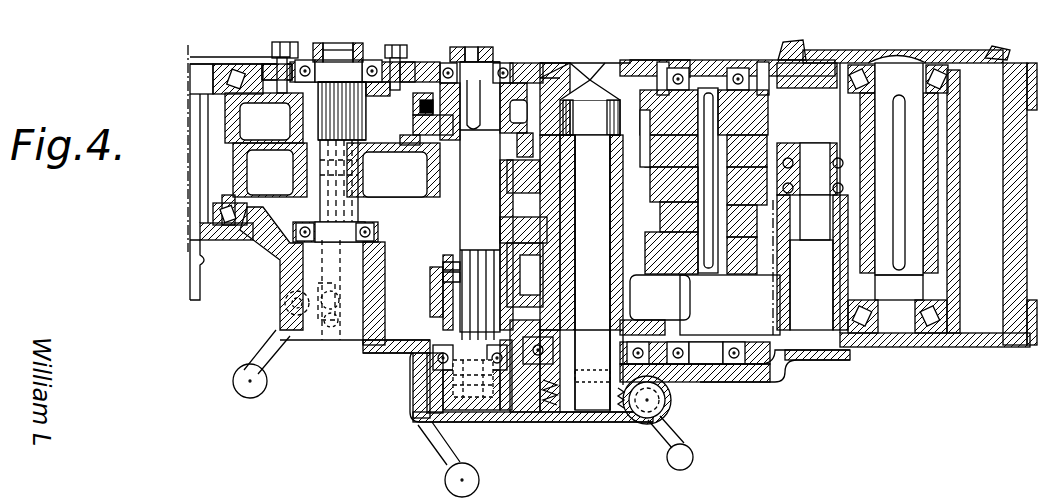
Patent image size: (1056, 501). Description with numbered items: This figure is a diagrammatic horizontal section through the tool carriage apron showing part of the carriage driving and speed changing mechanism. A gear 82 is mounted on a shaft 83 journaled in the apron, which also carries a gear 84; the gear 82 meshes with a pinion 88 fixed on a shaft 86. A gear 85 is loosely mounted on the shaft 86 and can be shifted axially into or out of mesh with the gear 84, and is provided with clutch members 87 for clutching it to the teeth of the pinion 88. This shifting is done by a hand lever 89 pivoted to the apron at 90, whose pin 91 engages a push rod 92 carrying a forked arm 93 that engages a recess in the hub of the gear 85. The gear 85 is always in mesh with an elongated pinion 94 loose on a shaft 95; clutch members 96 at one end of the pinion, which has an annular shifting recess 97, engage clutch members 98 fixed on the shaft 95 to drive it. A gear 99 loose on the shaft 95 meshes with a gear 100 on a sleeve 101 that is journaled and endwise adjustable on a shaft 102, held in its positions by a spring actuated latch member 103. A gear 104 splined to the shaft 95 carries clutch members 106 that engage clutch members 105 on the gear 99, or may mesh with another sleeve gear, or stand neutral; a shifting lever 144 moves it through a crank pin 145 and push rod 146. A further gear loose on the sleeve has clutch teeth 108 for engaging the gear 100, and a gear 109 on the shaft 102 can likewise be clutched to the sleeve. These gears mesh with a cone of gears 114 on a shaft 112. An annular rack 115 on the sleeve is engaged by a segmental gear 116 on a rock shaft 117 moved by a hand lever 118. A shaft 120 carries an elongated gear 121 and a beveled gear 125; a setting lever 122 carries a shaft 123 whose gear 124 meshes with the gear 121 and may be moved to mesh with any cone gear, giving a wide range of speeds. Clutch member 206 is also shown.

The gear 82 is at (334, 43).
The shaft 83 is at (213, 76).
The gear 84 is at (258, 232).
The gear 85 is at (250, 150).
The shaft 86 is at (345, 62).
The clutch members 87 is at (300, 147).
The pinion 88 is at (318, 116).
The hand lever 89 is at (270, 340).
The pivot 90 is at (290, 300).
The pin 91 is at (322, 288).
The push rod 92 is at (348, 335).
The forked arm 93 is at (290, 183).
The elongated pinion 94 is at (432, 188).
The shaft 95 is at (478, 75).
The clutch members 96 is at (413, 104).
The annular shifting recess 97 is at (426, 130).
The clutch members 98 is at (413, 82).
The gear 99 is at (428, 255).
The gear 100 is at (660, 225).
The sleeve 101 is at (645, 240).
The shaft 102 is at (584, 412).
The spring actuated latch member 103 is at (585, 382).
The gear 104 is at (428, 290).
The clutch members 105 is at (432, 262).
The clutch members 106 is at (522, 307).
The clutch teeth 108 is at (576, 245).
The gear 109 is at (525, 133).
The shaft 112 is at (722, 307).
The cone of gears 114 is at (783, 118).
The annular rack 115 is at (620, 415).
The segmental gear 116 is at (630, 412).
The rock shaft 117 is at (652, 400).
The hand lever 118 is at (685, 437).
The shaft 120 is at (578, 198).
The elongated gear 121 is at (942, 238).
The setting lever 122 is at (790, 230).
The shaft 123 is at (812, 240).
The gear 124 is at (860, 158).
The beveled gear 125 is at (790, 40).
The shifting lever 144 is at (466, 448).
The crank pin 145 is at (428, 420).
The push rod 146 is at (475, 410).
The clutch member 206 is at (432, 275).